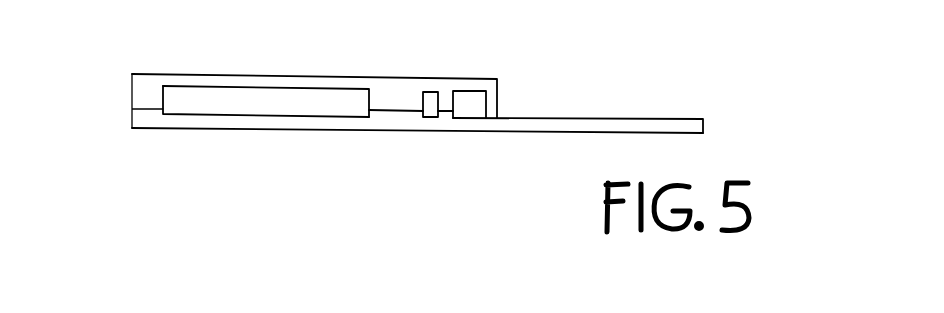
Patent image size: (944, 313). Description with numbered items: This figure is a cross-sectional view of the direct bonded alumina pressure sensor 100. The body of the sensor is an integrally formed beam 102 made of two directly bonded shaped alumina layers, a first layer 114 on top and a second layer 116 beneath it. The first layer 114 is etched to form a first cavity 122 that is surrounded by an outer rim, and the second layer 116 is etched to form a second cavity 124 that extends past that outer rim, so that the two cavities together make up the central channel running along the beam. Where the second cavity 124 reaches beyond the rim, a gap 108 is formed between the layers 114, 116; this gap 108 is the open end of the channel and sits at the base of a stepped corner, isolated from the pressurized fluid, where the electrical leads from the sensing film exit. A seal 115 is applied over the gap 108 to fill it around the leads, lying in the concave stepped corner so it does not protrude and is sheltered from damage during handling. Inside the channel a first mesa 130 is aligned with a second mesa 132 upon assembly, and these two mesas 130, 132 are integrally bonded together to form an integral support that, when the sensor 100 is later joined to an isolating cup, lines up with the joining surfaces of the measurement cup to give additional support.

The sensor 100 is at (654, 86).
The integrally formed beam 102 is at (111, 67).
The gap 108 is at (474, 106).
The first layer 114 is at (272, 82).
The seal 115 is at (501, 114).
The second layer 116 is at (278, 120).
The first cavity 122 is at (178, 92).
The second cavity 124 is at (205, 100).
The first mesa 130 is at (401, 95).
The second mesa 132 is at (398, 120).